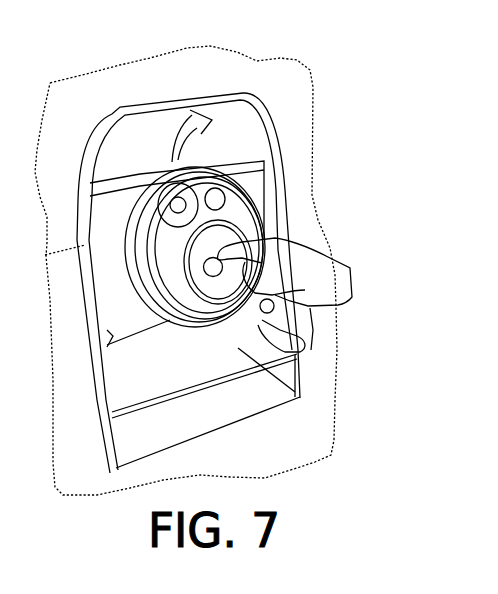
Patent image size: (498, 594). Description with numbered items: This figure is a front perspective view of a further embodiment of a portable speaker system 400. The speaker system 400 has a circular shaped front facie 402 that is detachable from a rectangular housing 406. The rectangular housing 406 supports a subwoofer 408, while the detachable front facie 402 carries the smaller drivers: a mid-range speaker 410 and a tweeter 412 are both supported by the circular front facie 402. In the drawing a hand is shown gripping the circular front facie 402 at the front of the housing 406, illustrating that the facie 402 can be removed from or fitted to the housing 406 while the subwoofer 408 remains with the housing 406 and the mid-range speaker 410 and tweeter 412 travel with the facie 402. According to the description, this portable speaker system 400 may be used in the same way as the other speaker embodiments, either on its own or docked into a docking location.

The speaker system 400 is at (322, 76).
The circular shaped front facie 402 is at (276, 198).
The rectangular housing 406 is at (234, 217).
The subwoofer 408 is at (225, 295).
The mid-range speaker 410 is at (170, 168).
The tweeter 412 is at (217, 172).